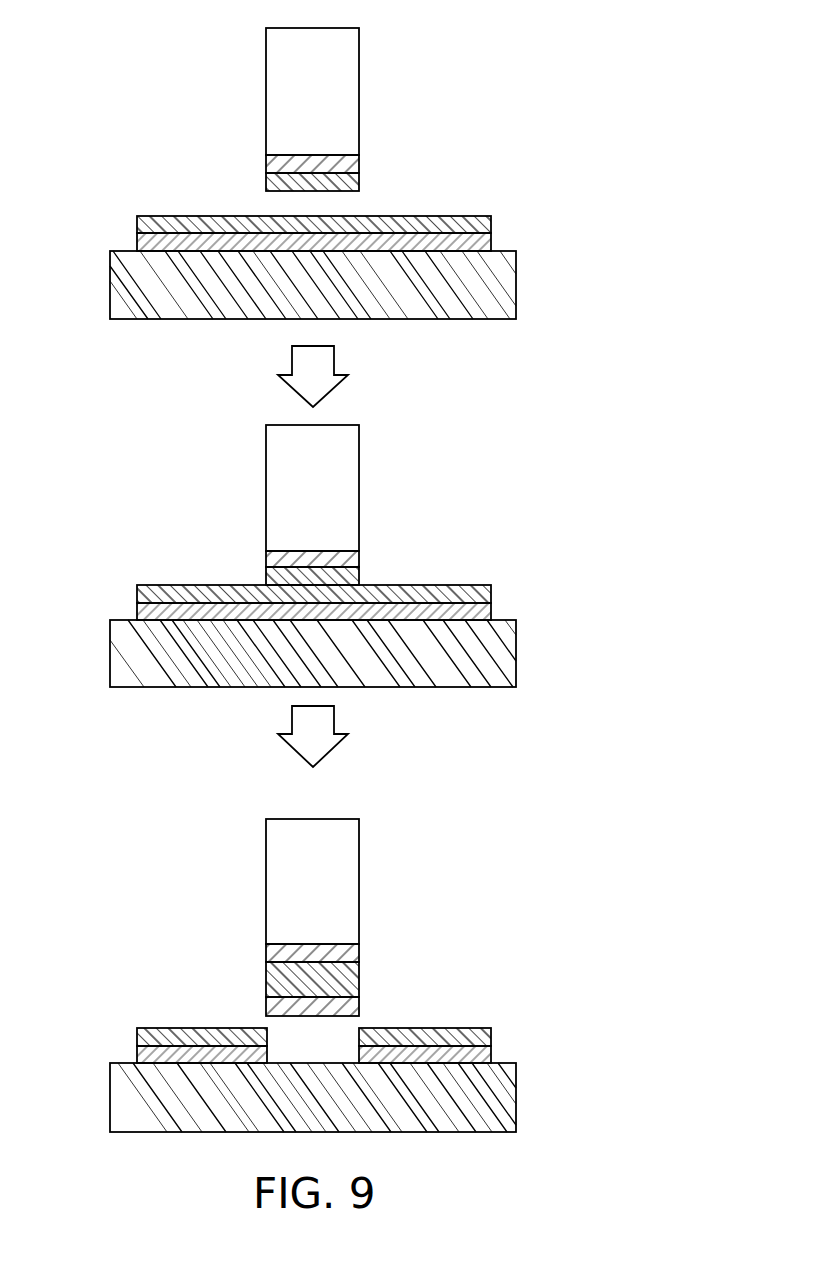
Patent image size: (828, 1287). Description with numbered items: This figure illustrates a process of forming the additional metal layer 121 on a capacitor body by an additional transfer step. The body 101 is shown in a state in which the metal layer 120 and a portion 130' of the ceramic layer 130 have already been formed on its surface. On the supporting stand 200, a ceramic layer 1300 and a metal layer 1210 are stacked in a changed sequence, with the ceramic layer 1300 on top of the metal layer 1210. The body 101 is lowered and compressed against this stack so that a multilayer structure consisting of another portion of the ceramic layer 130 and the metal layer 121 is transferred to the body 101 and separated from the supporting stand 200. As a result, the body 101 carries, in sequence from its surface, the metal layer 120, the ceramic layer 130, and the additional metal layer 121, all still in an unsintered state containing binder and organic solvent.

The body 101 is at (359, 72).
The metal layer 120 is at (359, 162).
The portion of the ceramic layer 130' is at (375, 377).
The ceramic layer 130 is at (373, 976).
The additional metal layer 121 is at (359, 1005).
The ceramic layer 1300 is at (491, 218).
The metal layer 1210 is at (491, 238).
The supporting stand 200 is at (516, 273).